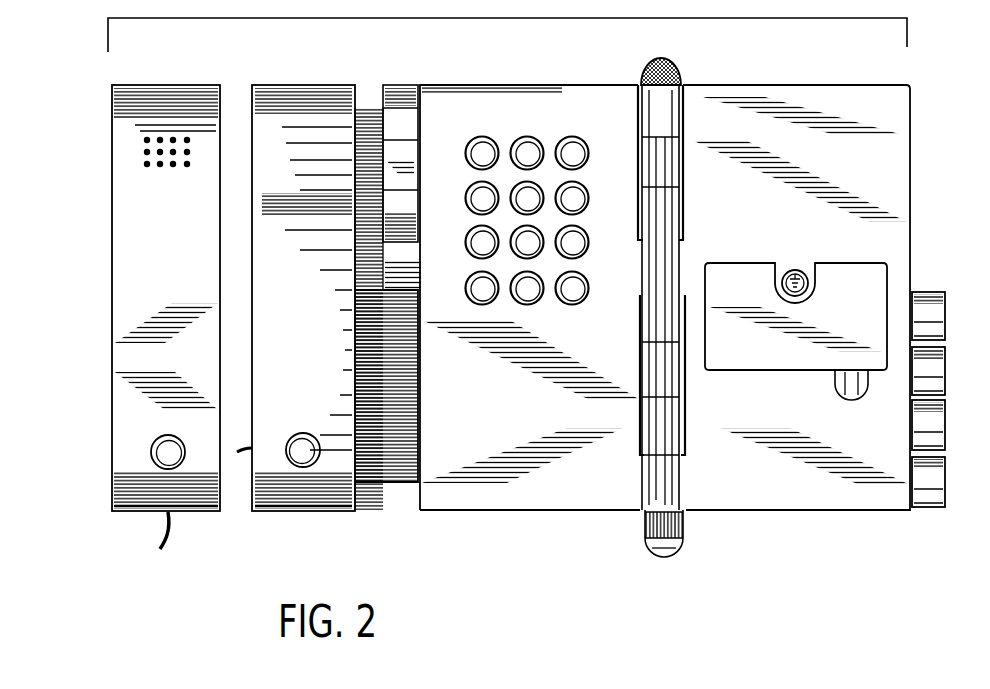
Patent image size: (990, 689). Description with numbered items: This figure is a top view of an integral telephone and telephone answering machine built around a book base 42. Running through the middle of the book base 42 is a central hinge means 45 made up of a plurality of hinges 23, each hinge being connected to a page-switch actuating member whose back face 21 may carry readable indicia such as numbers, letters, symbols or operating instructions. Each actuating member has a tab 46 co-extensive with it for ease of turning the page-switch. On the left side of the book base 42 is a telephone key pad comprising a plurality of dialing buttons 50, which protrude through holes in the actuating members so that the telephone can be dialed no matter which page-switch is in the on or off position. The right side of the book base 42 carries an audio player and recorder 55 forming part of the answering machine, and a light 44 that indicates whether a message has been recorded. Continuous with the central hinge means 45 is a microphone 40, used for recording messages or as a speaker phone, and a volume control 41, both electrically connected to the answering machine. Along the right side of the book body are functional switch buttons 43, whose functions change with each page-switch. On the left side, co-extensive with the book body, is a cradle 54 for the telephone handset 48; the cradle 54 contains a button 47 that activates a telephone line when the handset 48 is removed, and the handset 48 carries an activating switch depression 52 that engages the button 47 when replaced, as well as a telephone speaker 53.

The back face 21 is at (547, 482).
The hinges 23 is at (686, 212).
The microphone 40 is at (648, 64).
The volume control 41 is at (687, 527).
The book base 42 is at (807, 468).
The functional switch buttons 43 is at (948, 315).
The light 44 is at (797, 270).
The central hinge means 45 is at (638, 314).
The tab 46 is at (400, 103).
The button 47 is at (297, 458).
The telephone handset 48 is at (112, 296).
The dialing buttons 50 is at (491, 141).
The activating switch depression 52 is at (168, 458).
The telephone speaker 53 is at (141, 140).
The cradle 54 is at (302, 96).
The audio player and recorder 55 is at (877, 303).